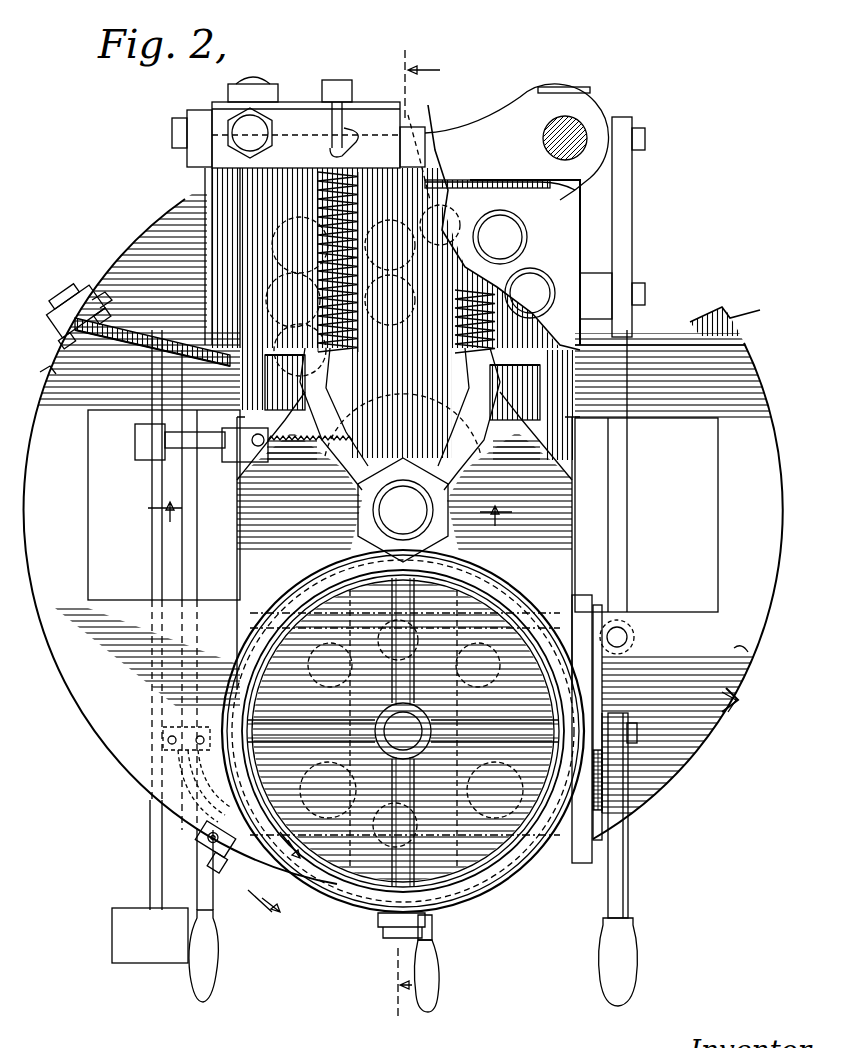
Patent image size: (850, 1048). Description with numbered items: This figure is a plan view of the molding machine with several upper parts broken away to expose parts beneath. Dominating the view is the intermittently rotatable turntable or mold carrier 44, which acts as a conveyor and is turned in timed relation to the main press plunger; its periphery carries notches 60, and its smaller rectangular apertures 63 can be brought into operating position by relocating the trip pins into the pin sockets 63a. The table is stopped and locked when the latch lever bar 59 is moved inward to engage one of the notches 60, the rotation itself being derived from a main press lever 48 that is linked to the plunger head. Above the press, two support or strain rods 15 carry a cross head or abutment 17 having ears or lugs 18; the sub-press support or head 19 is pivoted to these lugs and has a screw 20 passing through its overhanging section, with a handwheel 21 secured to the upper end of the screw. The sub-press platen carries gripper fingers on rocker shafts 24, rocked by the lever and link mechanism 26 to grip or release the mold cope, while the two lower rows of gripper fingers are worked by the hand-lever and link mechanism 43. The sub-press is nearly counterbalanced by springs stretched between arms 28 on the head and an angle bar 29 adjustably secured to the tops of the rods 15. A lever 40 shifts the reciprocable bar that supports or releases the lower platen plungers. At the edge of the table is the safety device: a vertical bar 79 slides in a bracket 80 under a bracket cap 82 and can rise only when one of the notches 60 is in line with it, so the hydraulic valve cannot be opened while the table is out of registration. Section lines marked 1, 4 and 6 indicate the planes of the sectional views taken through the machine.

The section line 1- 1 is at (405, 535).
The section line 4- 4 is at (330, 504).
The section line 6- 6 is at (280, 881).
The support or strain rods 15 is at (580, 128).
The cross head or abutment 17 is at (382, 272).
The ears or lugs 18 is at (402, 394).
The support or head 19 is at (573, 602).
The screw 20 is at (412, 742).
The handwheel 21 is at (502, 888).
The rocker shafts 24 is at (366, 318).
The lever and link mechanism 26 is at (630, 902).
The arms 28 is at (358, 402).
The angle bar 29 is at (330, 128).
The lever 40 is at (606, 902).
The hand-lever and link mechanism 43 is at (215, 960).
The turntable or mold carrier 44 is at (62, 690).
The main press lever 48 is at (192, 583).
The latch lever bar 59 is at (208, 850).
The notches 60 is at (206, 836).
The smaller rectangular apertures 63 is at (96, 502).
The pin sockets 63a is at (45, 375).
The vertical bar 79 is at (80, 300).
The bracket 80 is at (152, 349).
The bracket cap 82 is at (64, 324).